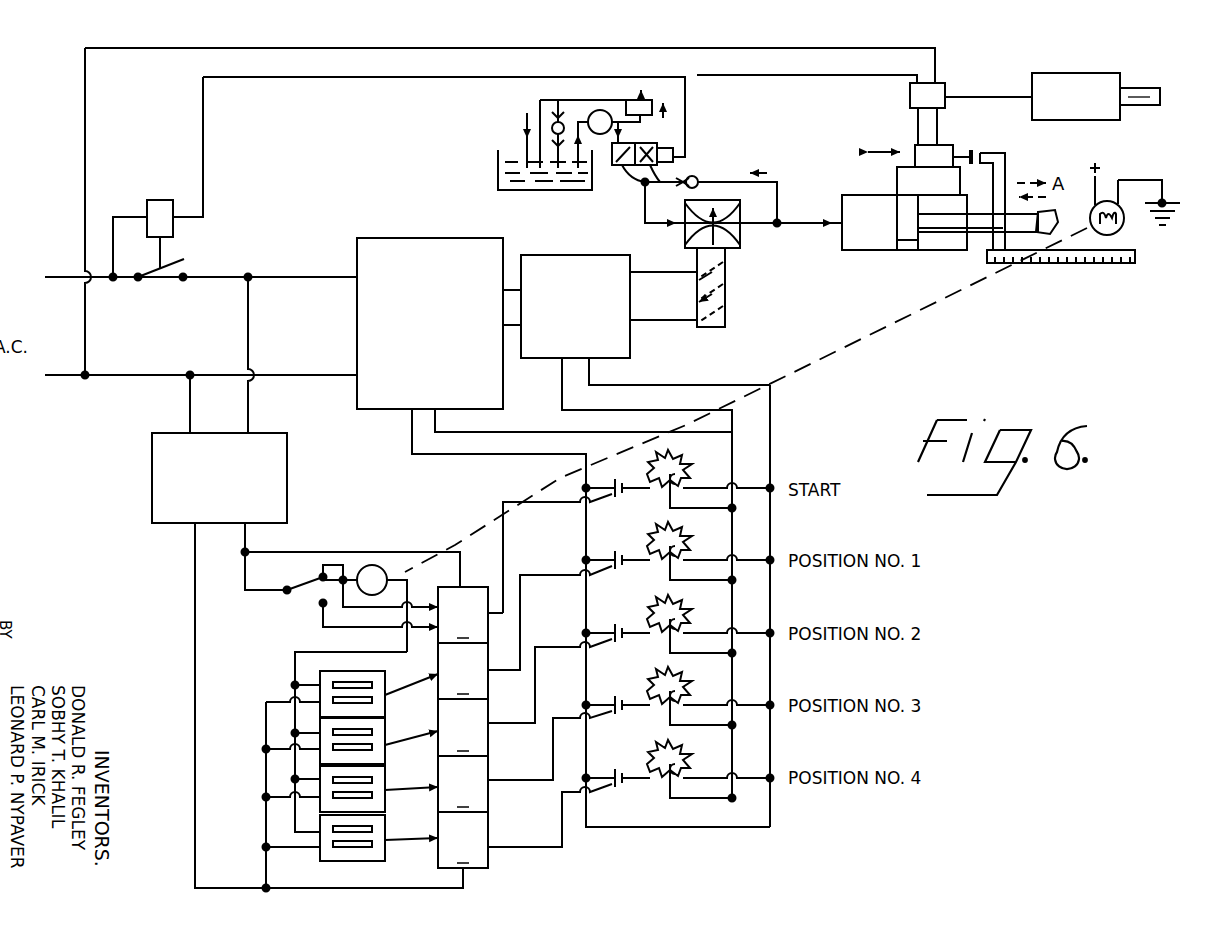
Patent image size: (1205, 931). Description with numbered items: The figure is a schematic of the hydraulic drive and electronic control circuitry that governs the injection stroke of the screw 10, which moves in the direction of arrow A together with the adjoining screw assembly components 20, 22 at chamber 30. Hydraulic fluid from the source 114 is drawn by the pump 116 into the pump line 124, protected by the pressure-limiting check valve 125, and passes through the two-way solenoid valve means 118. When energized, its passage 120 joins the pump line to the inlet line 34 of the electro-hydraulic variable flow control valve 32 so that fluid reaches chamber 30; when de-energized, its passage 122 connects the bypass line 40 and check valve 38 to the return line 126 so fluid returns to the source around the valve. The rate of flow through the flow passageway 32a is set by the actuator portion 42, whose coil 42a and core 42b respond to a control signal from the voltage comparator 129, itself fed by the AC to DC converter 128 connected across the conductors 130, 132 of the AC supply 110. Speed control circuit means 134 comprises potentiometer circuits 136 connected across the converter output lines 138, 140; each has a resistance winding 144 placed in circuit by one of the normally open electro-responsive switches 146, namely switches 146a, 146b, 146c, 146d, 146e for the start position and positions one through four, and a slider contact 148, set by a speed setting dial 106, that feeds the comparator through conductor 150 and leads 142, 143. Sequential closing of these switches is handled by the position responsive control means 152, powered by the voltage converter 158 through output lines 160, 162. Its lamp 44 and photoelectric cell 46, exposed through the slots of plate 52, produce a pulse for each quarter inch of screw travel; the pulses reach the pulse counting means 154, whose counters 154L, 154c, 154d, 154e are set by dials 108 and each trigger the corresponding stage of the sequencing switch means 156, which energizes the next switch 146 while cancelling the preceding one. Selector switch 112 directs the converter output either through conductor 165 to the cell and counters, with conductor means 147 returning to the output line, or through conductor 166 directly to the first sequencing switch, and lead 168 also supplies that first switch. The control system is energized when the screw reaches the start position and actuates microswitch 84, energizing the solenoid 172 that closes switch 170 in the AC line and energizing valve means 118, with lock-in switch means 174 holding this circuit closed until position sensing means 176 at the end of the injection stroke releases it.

The screw 10 is at (1060, 211).
The piston rod 20 is at (973, 245).
The piston 22 is at (892, 235).
The chamber 30 is at (889, 206).
The electro-hydraulic variable flow control valve 32 is at (763, 238).
The flow passageway 32a is at (783, 243).
The inlet line 34 is at (634, 208).
The check valve 38 is at (713, 179).
The bypass line 40 is at (761, 161).
The actuator portion 42 is at (752, 287).
The coil 42a is at (767, 317).
The core 42b is at (751, 339).
The lamp 44 is at (1136, 214).
The photo electric cell 46 is at (387, 590).
The plate 52 is at (1057, 225).
The microswitch 84 is at (935, 140).
The speed setting dials 106 is at (760, 609).
The position setting dials 108 is at (381, 883).
The AC supply 110 is at (193, 326).
The selector switch 112 is at (286, 598).
The source of hydraulic fluid 114 is at (505, 167).
The pump 116 is at (520, 122).
The two-way solenoid actuated valve means 118 is at (598, 163).
The passage 120 is at (635, 180).
The passage 122 is at (654, 187).
The pump line 124 is at (618, 96).
The check valve 125 is at (489, 140).
The fluid return line 126 is at (539, 133).
The AC to DC converter means 128 is at (439, 302).
The voltage comparator means 129 is at (609, 306).
The conductor 130 is at (282, 334).
The conductor 132 is at (201, 383).
The speed control circuit means 134 is at (912, 422).
The potentiometer circuits 136 is at (649, 655).
The output line 138 is at (591, 618).
The output line 140 is at (643, 579).
The lead 142 is at (810, 606).
The lead 143 is at (720, 382).
The resistance windings 144 is at (703, 591).
The electro-responsive switch components 146 is at (416, 763).
The electro-responsive switch 146a is at (572, 509).
The electro-responsive switch 146b is at (555, 610).
The electro-responsive switch 146c is at (555, 673).
The electro-responsive switch 146d is at (566, 738).
The electro-responsive switch 146e is at (591, 813).
The conductor means 147 is at (259, 792).
The slider contact 148 is at (724, 605).
The conductor 150 is at (760, 663).
The screw position responsive control means 152 is at (281, 642).
The electronic pulse counting means 154 is at (322, 775).
The pulse counting circuit 154L is at (382, 699).
The pulse counting circuit 154c is at (382, 747).
The pulse counting circuit 154d is at (383, 796).
The pulse counting circuit 154e is at (383, 847).
The electronic sequencing switch means 156 is at (502, 749).
The voltage converter 158 is at (183, 478).
The DC output line 160 is at (528, 547).
The DC output line 162 is at (329, 718).
The conductor 165 is at (348, 543).
The conductor 166 is at (347, 621).
The lead 168 is at (403, 586).
The switch 170 is at (148, 284).
The solenoid 172 is at (157, 179).
The lock-in switch means 174 is at (942, 114).
The position sensing means 176 is at (1096, 109).